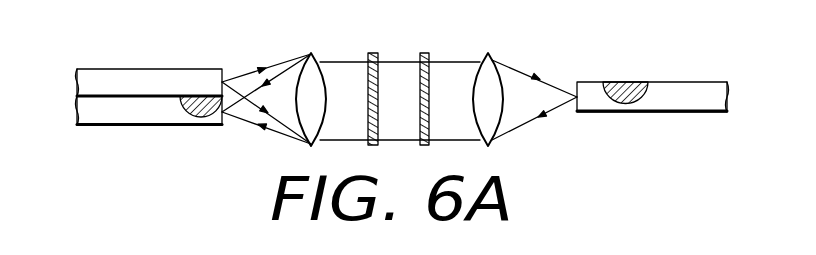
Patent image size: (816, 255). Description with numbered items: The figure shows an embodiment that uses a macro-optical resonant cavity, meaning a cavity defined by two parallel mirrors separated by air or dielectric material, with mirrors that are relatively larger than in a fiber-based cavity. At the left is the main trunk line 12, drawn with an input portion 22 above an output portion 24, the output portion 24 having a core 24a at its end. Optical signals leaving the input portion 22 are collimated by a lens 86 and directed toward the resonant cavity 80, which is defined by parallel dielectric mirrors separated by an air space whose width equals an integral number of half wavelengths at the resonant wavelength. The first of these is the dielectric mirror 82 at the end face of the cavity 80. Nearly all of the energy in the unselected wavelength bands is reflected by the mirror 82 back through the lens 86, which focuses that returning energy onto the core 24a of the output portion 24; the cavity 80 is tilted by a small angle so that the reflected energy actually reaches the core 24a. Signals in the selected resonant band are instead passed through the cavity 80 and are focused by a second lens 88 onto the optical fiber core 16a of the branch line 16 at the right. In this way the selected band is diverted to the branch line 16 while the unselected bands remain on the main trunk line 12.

The main trunk line 12 is at (146, 96).
The input portion 22 is at (167, 69).
The output portion 24 is at (149, 128).
The core 24a is at (203, 118).
The resonant cavity 80 is at (400, 47).
The dielectric mirror 82 is at (371, 53).
The lens 86 is at (305, 56).
The lens 88 is at (491, 57).
The branch line 16 is at (653, 98).
The optical fiber core 16a is at (622, 103).